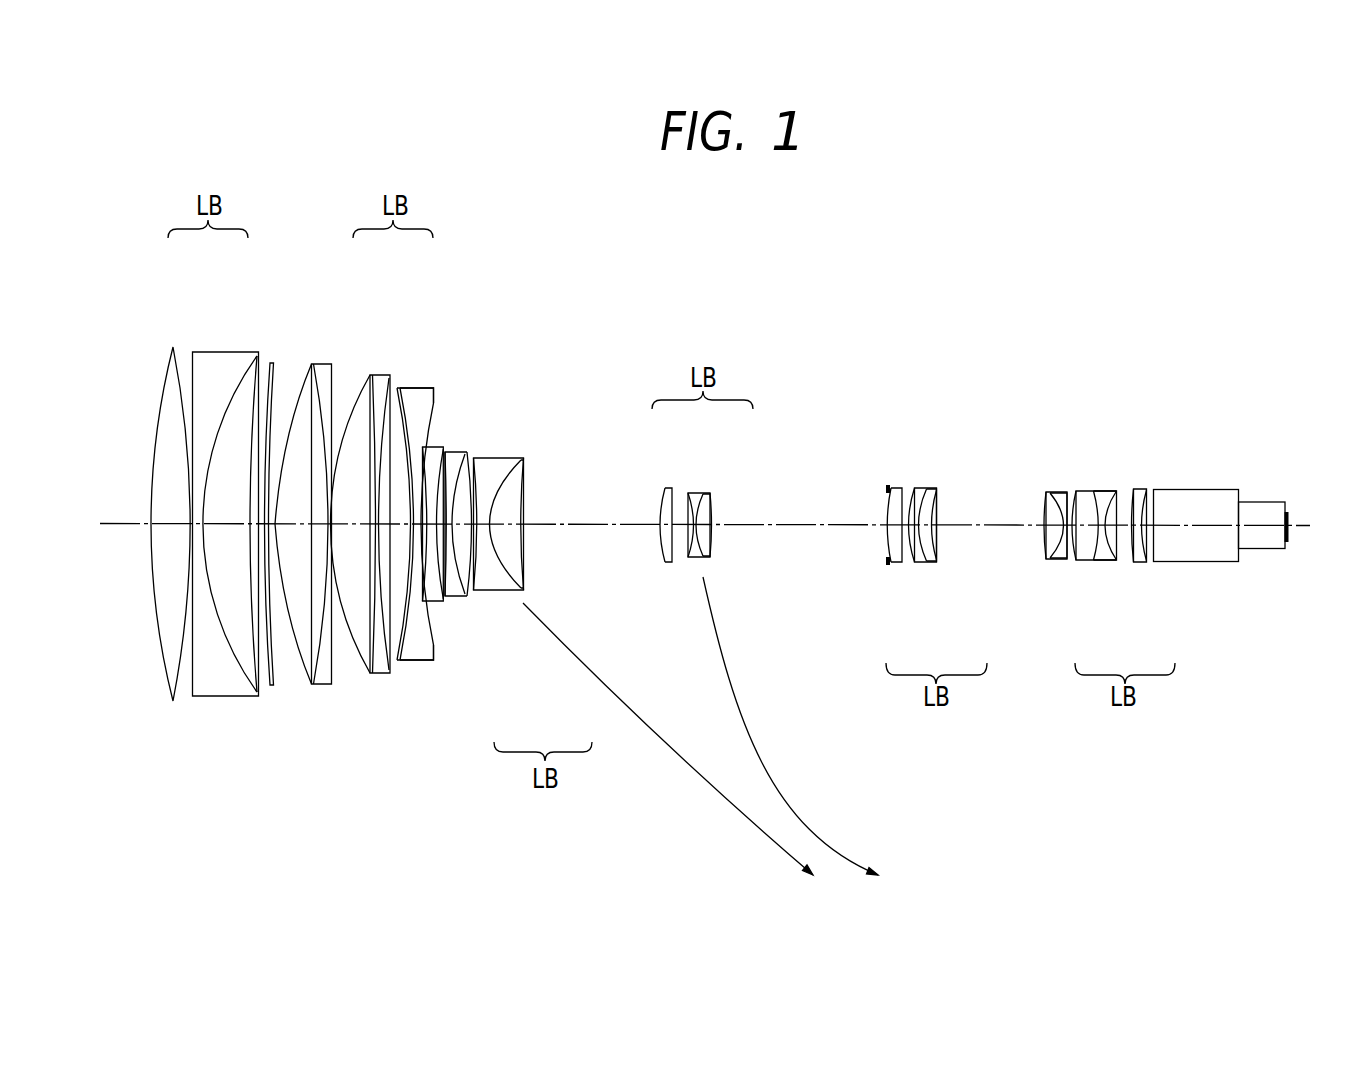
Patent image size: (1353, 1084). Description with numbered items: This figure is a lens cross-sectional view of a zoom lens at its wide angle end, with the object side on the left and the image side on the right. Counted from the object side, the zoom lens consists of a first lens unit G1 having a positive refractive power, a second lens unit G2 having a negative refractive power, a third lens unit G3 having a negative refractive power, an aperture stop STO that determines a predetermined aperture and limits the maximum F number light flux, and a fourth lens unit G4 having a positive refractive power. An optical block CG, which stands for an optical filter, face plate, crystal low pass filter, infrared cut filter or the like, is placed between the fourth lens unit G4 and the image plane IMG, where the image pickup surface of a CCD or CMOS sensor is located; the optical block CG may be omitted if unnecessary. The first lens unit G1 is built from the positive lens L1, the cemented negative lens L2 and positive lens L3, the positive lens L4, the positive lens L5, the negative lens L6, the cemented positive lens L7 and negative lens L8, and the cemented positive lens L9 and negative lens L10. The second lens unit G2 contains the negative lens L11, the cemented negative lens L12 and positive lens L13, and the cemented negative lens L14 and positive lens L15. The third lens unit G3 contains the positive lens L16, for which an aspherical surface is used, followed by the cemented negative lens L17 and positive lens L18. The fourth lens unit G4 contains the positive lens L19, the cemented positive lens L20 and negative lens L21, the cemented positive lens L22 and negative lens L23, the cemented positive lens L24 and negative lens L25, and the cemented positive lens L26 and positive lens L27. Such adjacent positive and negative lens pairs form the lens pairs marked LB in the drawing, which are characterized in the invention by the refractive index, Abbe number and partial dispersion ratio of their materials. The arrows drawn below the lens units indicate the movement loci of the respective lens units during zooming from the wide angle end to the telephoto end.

The first lens unit G1 is at (495, 187).
The second lens unit G2 is at (592, 792).
The third lens unit G3 is at (753, 361).
The fourth lens unit G4 is at (1262, 706).
The positive lens L1 is at (163, 402).
The negative lens L2 is at (210, 368).
The positive lens L3 is at (245, 393).
The positive lens L4 is at (271, 362).
The positive lens L5 is at (310, 373).
The negative lens L6 is at (326, 370).
The positive lens L7 is at (356, 393).
The negative lens L8 is at (378, 380).
The positive lens L9 is at (412, 390).
The negative lens L10 is at (427, 393).
The negative lens L11 is at (430, 590).
The negative lens L12 is at (450, 590).
The positive lens L13 is at (468, 580).
The negative lens L14 is at (490, 580).
The positive lens L15 is at (513, 580).
The positive lens L16 is at (665, 490).
The negative lens L17 is at (695, 493).
The positive lens L18 is at (715, 497).
The positive lens L19 is at (895, 563).
The positive lens L20 is at (920, 563).
The negative lens L21 is at (927, 563).
The positive lens L22 is at (1052, 543).
The negative lens L23 is at (1060, 553).
The positive lens L24 is at (1085, 553).
The negative lens L25 is at (1105, 557).
The positive lens L26 is at (1142, 563).
The positive lens L27 is at (1150, 538).
The aperture stop STO is at (887, 487).
The optical block CG is at (1262, 508).
The image plane IMG is at (1287, 515).